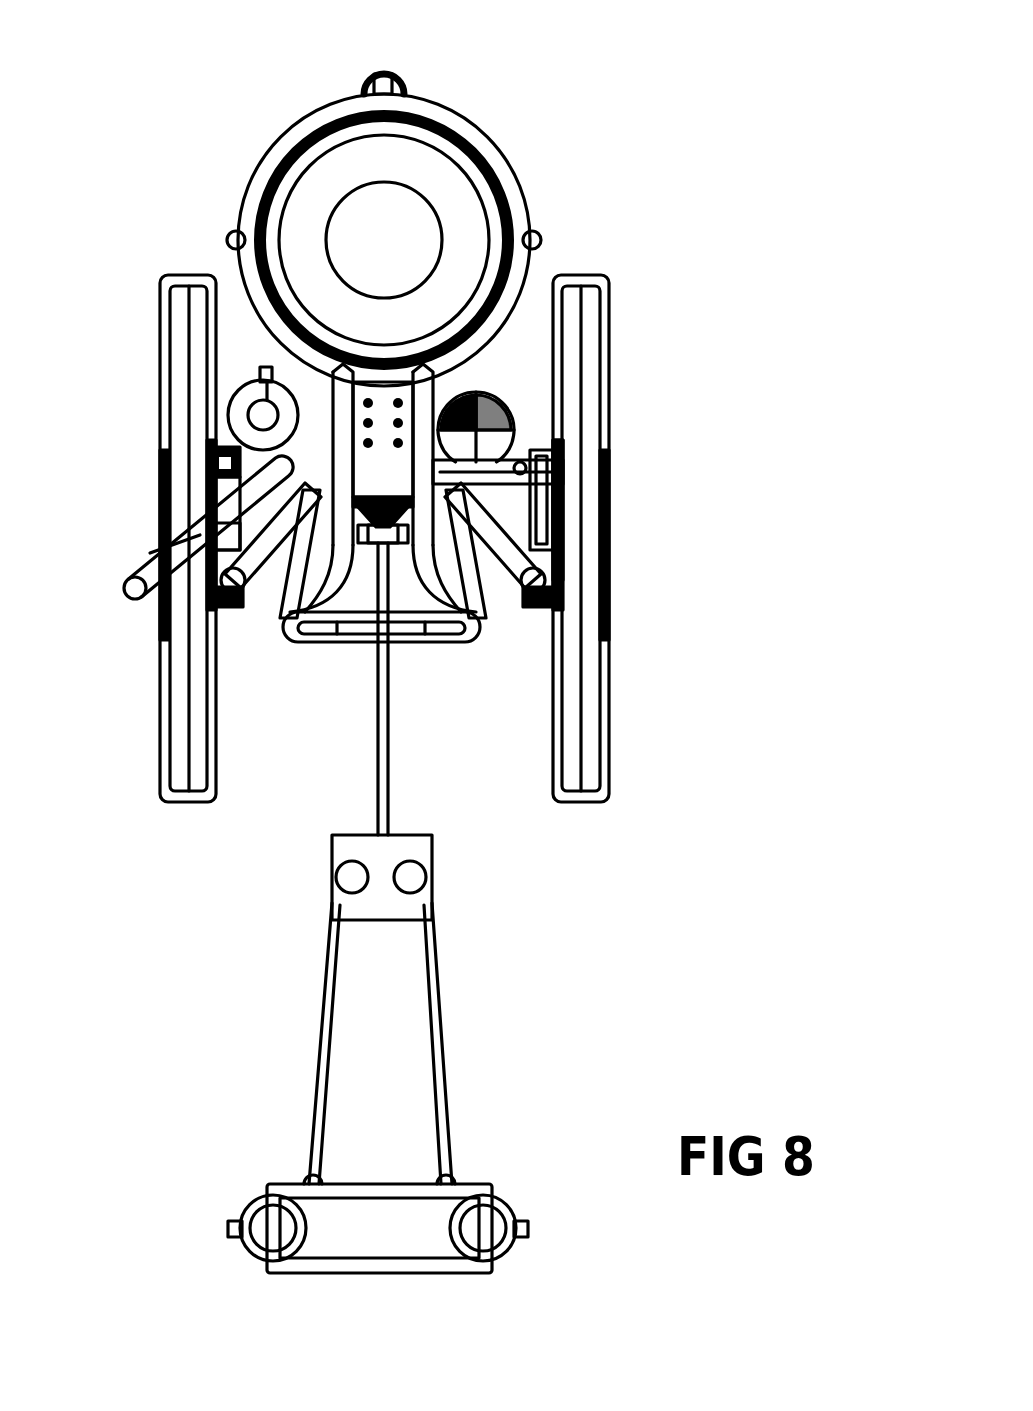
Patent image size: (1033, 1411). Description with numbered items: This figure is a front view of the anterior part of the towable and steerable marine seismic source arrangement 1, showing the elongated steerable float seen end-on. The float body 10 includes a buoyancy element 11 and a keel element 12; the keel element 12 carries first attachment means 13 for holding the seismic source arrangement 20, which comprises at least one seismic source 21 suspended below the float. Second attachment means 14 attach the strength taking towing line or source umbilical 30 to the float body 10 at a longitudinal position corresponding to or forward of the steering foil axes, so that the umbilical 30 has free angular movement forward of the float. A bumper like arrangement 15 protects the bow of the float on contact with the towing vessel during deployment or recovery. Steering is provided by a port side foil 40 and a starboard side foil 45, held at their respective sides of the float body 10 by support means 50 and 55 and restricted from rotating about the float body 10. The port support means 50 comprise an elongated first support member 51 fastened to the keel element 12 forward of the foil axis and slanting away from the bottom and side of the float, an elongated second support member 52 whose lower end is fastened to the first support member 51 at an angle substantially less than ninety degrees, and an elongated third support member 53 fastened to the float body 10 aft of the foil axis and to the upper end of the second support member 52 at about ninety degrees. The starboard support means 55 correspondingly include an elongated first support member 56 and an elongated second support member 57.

The lighting device 1 is at (594, 108).
The float body 10 is at (305, 122).
The buoyancy element 11 is at (292, 188).
The keel element 12 is at (382, 405).
The first attachment means 13 is at (378, 556).
The second attachment means 14 is at (300, 540).
The bumper like arrangement 15 is at (440, 640).
The seismic source arrangement 20 is at (435, 863).
The seismic source 21 is at (485, 1230).
The strength taking towing line or source umbilical 30 is at (125, 593).
The port side foil 40 is at (590, 378).
The starboard side foil 45 is at (178, 323).
The support means 50 is at (515, 498).
The elongated first support member 51 is at (563, 570).
The elongated second support member 52 is at (542, 530).
The elongated third support member 53 is at (473, 467).
The support means 55 is at (260, 515).
The elongated first support member 56 is at (207, 590).
The elongated second support member 57 is at (150, 552).